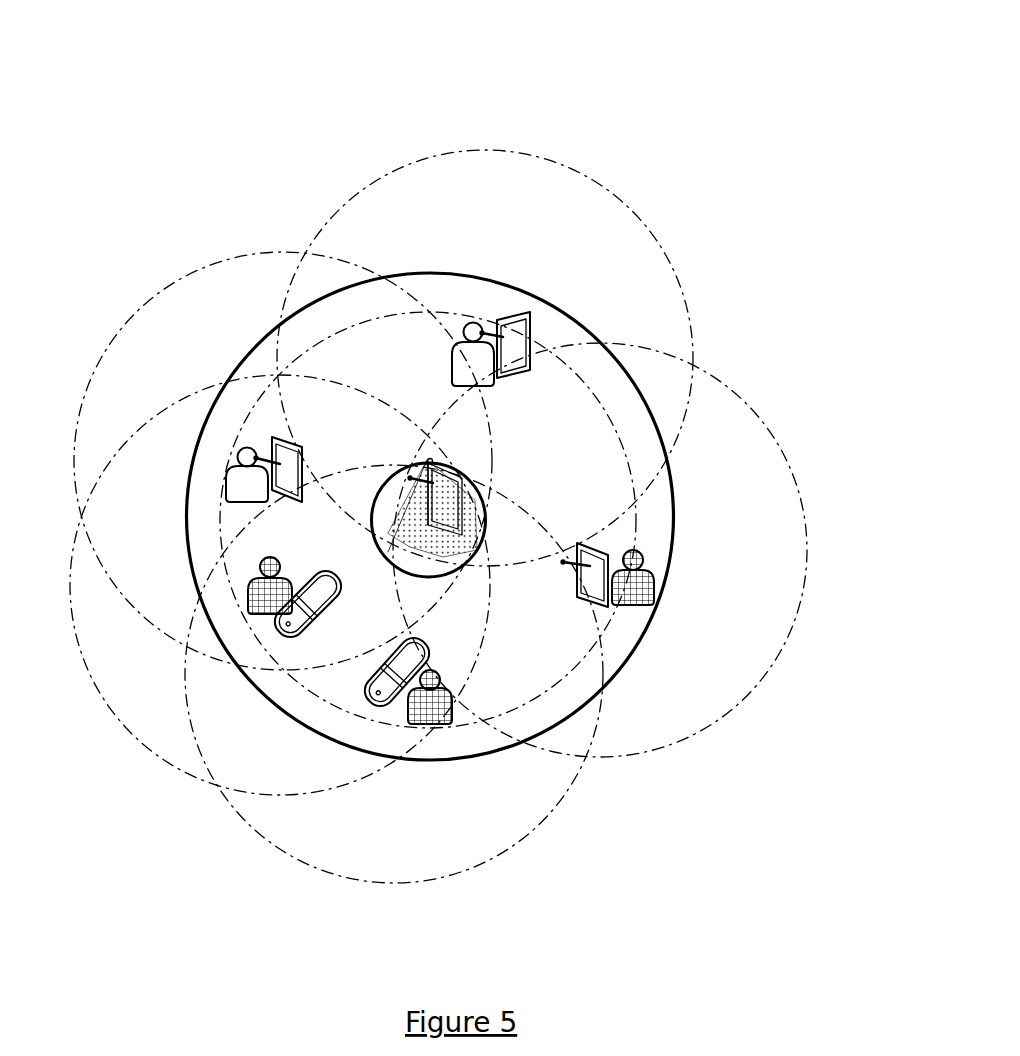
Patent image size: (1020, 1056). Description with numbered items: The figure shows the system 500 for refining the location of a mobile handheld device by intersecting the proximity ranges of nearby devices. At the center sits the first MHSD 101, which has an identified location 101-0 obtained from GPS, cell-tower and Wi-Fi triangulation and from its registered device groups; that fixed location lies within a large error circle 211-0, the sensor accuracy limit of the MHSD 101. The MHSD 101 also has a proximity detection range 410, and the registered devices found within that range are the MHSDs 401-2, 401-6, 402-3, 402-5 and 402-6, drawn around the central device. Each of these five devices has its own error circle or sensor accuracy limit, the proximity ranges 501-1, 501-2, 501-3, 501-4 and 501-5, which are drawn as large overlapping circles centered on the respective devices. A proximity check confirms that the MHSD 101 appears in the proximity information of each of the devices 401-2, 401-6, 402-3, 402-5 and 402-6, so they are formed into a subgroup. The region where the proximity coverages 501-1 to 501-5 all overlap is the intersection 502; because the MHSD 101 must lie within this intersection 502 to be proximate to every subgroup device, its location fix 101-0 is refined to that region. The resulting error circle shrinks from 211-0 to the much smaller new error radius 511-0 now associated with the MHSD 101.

The system 500 is at (648, 80).
The error circle 211-0 is at (582, 302).
The proximity range 501-1 is at (697, 733).
The proximity range 501-2 is at (452, 872).
The proximity range 501-3 is at (143, 740).
The proximity range 501-4 is at (160, 290).
The proximity range 501-5 is at (656, 233).
The new error radius 511-0 is at (433, 580).
The intersection 502 is at (413, 518).
The MHSD 101 is at (482, 492).
The identified location 101-0 is at (388, 552).
The MHSD 401-2 is at (453, 330).
The MHSD 401-6 is at (232, 452).
The MHSD 402-6 is at (250, 596).
The MHSD 402-5 is at (417, 728).
The MHSD 402-3 is at (650, 610).
The proximity detection range 410 is at (643, 521).